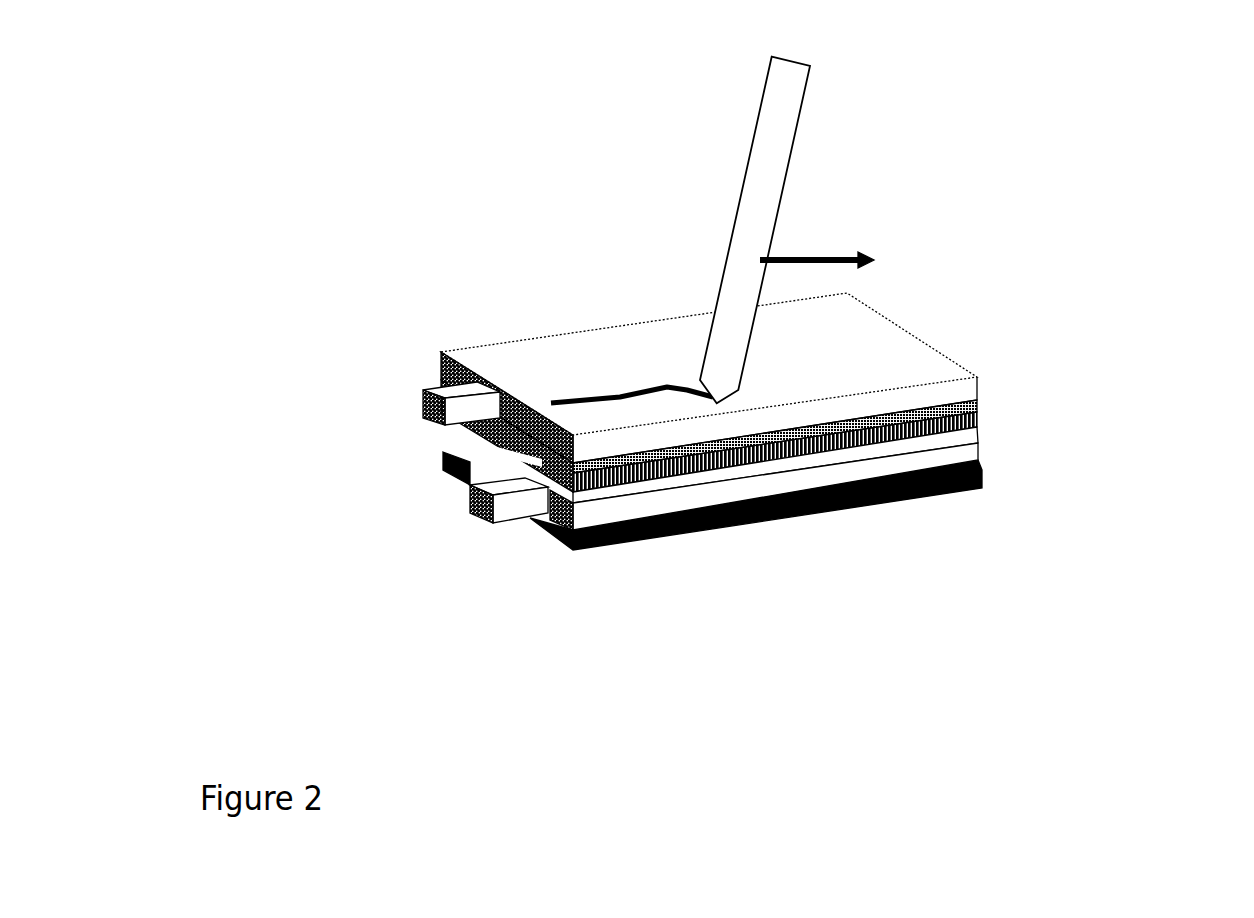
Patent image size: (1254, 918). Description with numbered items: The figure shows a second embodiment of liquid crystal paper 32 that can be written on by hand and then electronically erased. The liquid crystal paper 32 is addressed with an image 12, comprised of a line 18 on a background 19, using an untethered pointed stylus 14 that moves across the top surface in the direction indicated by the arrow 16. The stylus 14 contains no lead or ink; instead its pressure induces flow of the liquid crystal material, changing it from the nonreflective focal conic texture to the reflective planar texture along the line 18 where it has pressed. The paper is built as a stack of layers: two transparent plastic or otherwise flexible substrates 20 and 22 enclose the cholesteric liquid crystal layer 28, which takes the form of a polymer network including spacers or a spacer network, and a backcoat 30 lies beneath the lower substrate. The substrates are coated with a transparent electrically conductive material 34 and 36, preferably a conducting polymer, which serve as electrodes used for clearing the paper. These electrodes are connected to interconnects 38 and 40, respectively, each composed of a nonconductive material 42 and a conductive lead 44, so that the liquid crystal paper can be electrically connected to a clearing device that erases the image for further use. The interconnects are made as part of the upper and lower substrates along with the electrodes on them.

The image 12 is at (668, 338).
The pointed stylus 14 is at (762, 98).
The arrow 16 is at (822, 255).
The line 18 is at (622, 395).
The background 19 is at (922, 345).
The substrate 20 is at (980, 380).
The substrate 22 is at (980, 462).
The cholesteric liquid crystal layer 28 is at (440, 458).
The backcoat 30 is at (752, 526).
The liquid crystal paper 32 is at (1156, 173).
The transparent electrically conductive material 34 is at (980, 404).
The transparent electrically conductive material 36 is at (980, 428).
The interconnect 38 is at (342, 354).
The interconnect 40 is at (510, 502).
The nonconductive material 42 is at (425, 395).
The conductive lead 44 is at (425, 418).